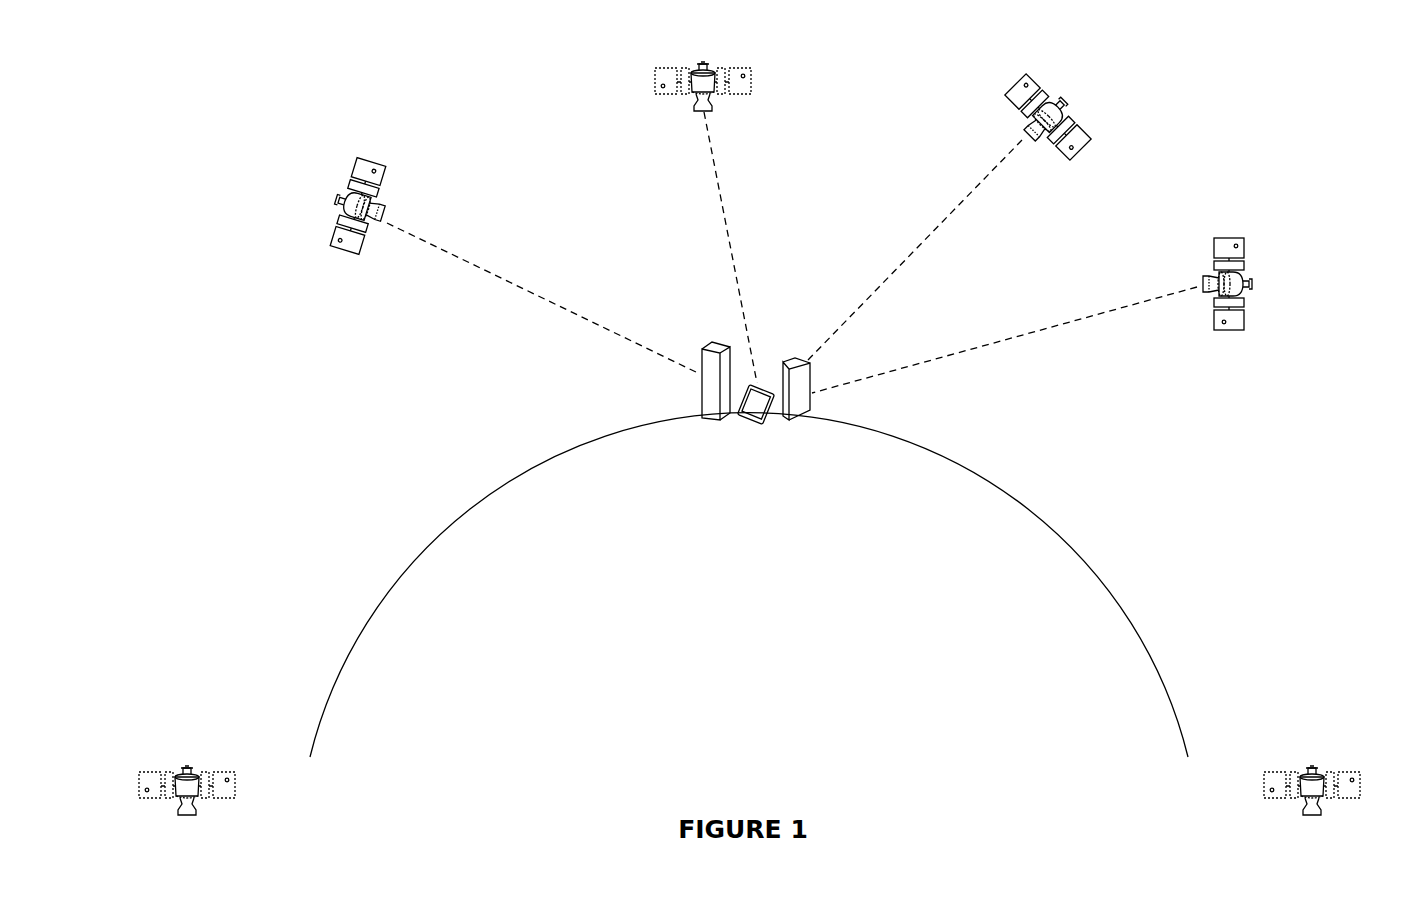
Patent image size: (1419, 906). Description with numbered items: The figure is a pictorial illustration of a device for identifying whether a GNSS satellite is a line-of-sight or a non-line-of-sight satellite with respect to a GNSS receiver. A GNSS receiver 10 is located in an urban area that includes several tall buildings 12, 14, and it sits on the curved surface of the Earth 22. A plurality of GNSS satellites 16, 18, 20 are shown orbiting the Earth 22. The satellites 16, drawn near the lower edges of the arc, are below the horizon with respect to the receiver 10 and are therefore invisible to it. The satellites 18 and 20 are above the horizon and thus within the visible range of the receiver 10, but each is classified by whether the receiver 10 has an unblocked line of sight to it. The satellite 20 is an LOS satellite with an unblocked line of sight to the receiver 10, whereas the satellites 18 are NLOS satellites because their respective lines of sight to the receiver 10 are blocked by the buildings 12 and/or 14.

The GNSS receiver 10 is at (740, 428).
The tall building 12 is at (701, 398).
The tall building 14 is at (810, 406).
The GNSS satellites 16 is at (186, 767).
The GNSS satellites 18 is at (787, 199).
The GNSS satellite 20 is at (703, 72).
The Earth 22 is at (383, 598).